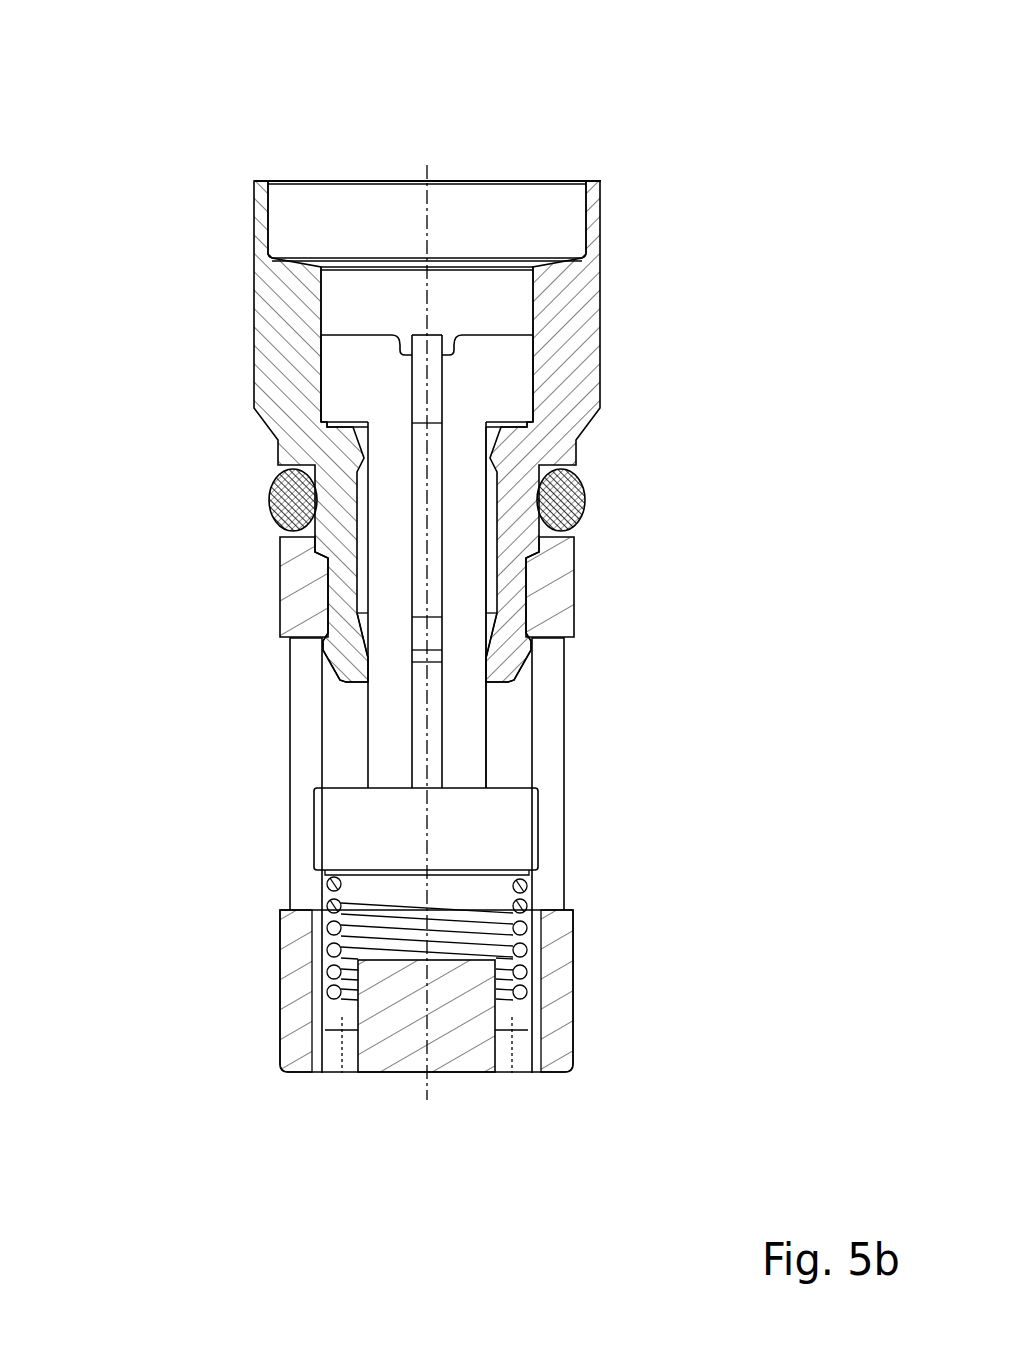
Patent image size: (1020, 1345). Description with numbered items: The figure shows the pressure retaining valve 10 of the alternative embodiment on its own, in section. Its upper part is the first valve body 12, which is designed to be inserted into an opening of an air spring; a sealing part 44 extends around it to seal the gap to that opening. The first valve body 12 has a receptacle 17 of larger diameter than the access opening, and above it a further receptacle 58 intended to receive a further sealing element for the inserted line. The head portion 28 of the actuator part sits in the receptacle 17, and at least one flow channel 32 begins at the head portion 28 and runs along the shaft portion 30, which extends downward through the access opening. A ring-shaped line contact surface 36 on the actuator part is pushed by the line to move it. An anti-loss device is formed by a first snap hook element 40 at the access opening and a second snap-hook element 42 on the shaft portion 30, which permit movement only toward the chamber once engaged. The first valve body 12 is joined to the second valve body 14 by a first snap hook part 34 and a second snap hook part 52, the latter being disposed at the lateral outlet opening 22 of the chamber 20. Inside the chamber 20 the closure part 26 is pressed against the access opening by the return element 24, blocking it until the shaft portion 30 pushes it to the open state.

The pressure retaining valve 10 is at (282, 124).
The first valve body 12 is at (568, 330).
The second valve body 14 is at (552, 1023).
The receptacle 17 is at (478, 300).
The chamber 20 is at (495, 767).
The lateral outlet opening 22 is at (298, 843).
The return element 24 is at (532, 935).
The closure part 26 is at (493, 843).
The head portion 28 is at (350, 392).
The shaft portion 30 is at (383, 722).
The flow channel 32 is at (395, 342).
The first snap hook part 34 is at (322, 663).
The line contact surface 36 is at (345, 335).
The first snap hook element 40 is at (487, 460).
The second snap-hook element 42 is at (480, 627).
The sealing part 44 is at (580, 490).
The second snap hook part 52 is at (315, 628).
The further receptacle 58 is at (582, 226).